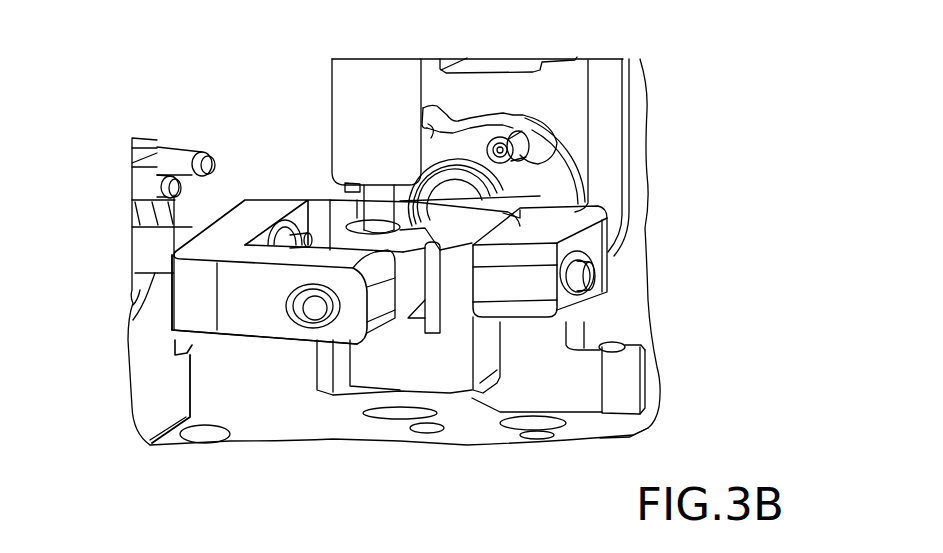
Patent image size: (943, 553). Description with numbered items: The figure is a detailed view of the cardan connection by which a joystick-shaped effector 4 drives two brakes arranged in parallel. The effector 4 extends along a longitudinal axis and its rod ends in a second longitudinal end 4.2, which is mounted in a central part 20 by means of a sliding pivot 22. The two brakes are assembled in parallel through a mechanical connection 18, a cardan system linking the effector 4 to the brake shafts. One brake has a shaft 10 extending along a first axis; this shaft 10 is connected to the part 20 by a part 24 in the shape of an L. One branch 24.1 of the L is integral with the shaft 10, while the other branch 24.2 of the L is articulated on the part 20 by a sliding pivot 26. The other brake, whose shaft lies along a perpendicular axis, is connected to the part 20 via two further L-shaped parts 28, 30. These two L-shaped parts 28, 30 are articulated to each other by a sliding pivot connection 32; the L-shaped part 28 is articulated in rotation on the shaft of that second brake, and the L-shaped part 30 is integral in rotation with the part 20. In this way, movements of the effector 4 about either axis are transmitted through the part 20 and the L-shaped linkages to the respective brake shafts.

The effector 4 is at (311, 99).
The second longitudinal end 4.2 is at (366, 195).
The shaft 10 is at (153, 237).
The mechanical connection 18 is at (336, 410).
The part 20 is at (403, 293).
The sliding pivot 22 is at (403, 212).
The L-shaped part 24 is at (242, 306).
The branch 24.1 is at (235, 217).
The branch 24.2 is at (253, 327).
The sliding pivot 26 is at (327, 324).
The L-shaped part 28 is at (620, 256).
The L-shaped part 30 is at (450, 394).
The sliding pivot connection 32 is at (568, 298).